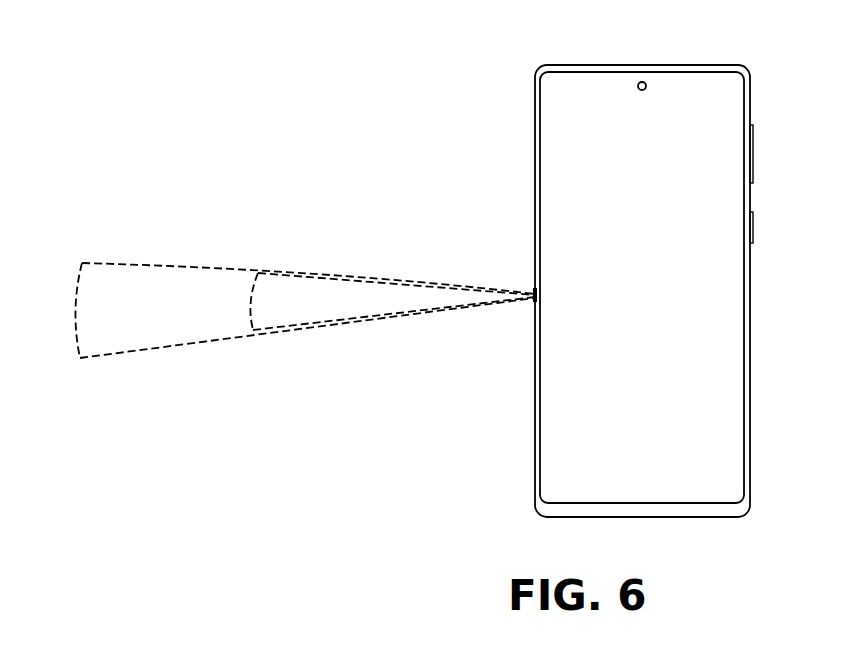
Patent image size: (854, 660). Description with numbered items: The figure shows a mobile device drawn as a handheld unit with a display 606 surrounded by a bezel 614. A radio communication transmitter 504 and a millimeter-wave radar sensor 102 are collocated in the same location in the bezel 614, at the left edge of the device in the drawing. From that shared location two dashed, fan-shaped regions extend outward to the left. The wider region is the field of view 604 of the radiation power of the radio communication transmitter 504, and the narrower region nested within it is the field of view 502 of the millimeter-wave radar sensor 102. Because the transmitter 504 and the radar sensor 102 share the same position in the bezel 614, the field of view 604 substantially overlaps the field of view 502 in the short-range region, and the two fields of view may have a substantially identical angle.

The bezel 614 is at (655, 71).
The display 606 is at (644, 289).
The millimeter-wave radar sensor 102 is at (535, 302).
The radio communication transmitter 504 is at (535, 290).
The field of view 502 is at (253, 320).
The field of view 604 is at (77, 350).